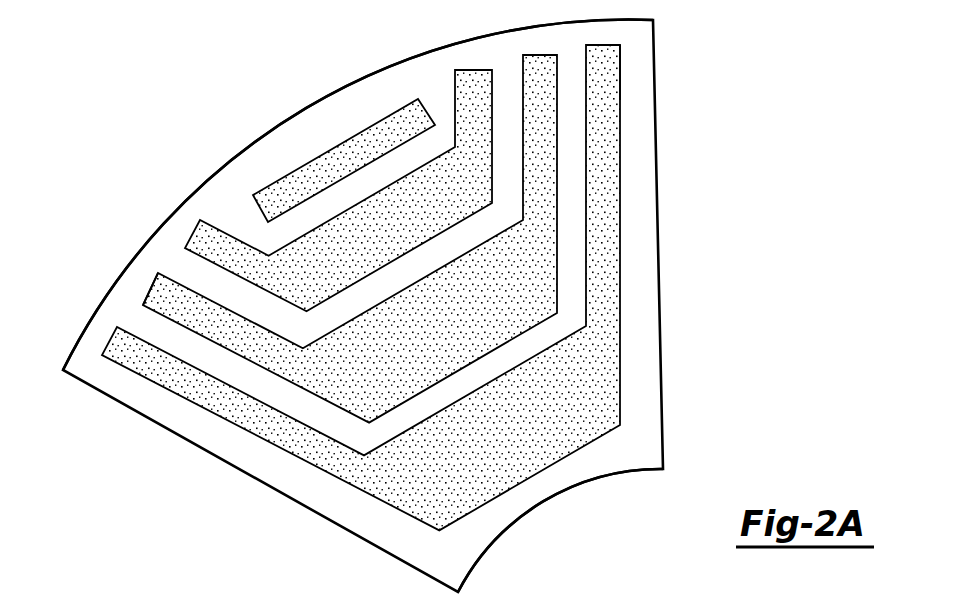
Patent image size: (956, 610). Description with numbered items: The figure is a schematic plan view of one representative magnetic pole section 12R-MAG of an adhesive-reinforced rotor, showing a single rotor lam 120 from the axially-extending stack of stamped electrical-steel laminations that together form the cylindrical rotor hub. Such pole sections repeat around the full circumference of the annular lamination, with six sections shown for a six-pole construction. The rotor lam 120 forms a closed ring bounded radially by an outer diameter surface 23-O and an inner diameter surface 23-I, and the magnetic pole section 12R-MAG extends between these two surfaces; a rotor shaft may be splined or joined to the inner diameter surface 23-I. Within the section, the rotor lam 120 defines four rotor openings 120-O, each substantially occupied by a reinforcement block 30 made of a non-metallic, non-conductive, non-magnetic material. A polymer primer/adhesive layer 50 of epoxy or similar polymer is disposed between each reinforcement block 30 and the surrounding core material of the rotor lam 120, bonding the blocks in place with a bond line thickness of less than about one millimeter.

The rotor lam 120 is at (262, 460).
The rotor opening 120-O is at (486, 183).
The outer diameter surface 23-O is at (227, 167).
The inner diameter surface 23-I is at (547, 500).
The reinforcement block 30 is at (343, 157).
The polymer primer/adhesive layer 50 is at (158, 313).
The magnetic pole section 12R-MAG is at (795, 75).